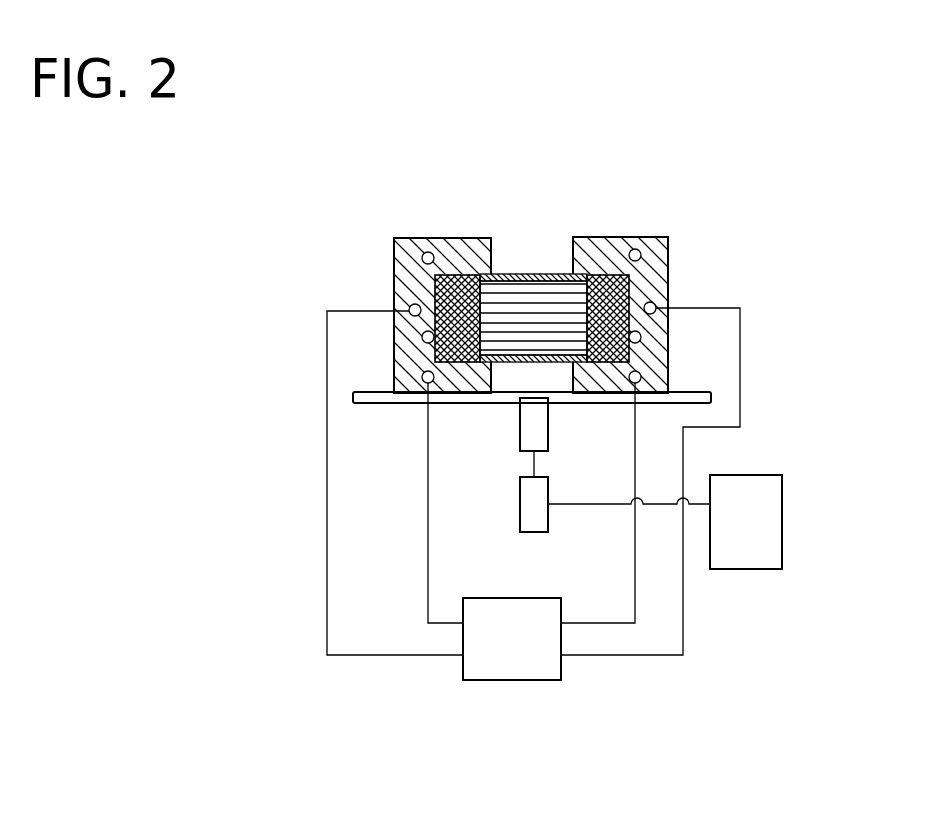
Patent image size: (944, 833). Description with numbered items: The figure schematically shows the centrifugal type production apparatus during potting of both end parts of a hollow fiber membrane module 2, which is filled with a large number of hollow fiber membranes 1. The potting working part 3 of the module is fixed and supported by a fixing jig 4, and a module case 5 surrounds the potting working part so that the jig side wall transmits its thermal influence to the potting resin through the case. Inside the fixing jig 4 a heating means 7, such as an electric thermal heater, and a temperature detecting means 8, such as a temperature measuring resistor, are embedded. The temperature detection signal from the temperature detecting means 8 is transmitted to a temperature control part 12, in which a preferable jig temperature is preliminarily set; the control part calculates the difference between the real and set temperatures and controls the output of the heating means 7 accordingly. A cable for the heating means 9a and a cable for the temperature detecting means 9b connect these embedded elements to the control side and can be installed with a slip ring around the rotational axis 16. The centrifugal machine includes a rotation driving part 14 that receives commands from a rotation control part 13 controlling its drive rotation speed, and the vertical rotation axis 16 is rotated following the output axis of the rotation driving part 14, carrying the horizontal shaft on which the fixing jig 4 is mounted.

The hollow fiber membranes 1 is at (556, 283).
The hollow fiber membrane module 2 is at (534, 265).
The potting working part 3 is at (452, 283).
The fixing jig 4 is at (470, 248).
The module case 5 is at (512, 277).
The heating means 7 is at (422, 258).
The temperature detecting means 8 is at (409, 310).
The cable for the heating means 9a is at (429, 560).
The cable for the temperature detecting means 9b is at (327, 523).
The temperature control part 12 is at (510, 680).
The rotation control part 13 is at (782, 514).
The rotation driving part 14 is at (520, 510).
The rotation axis 16 is at (520, 430).